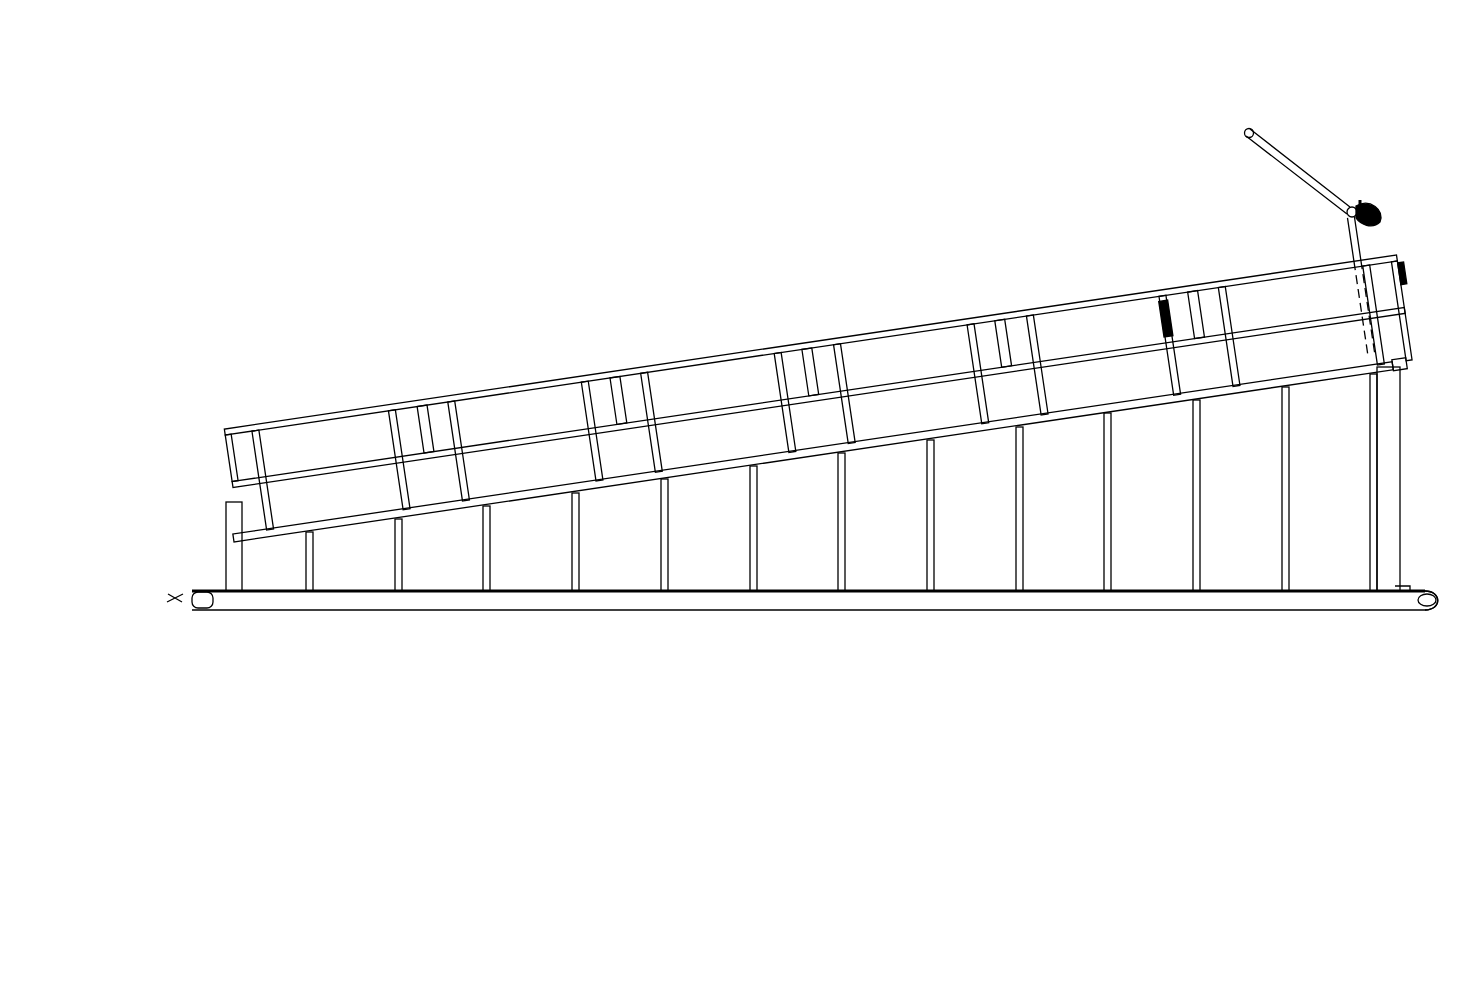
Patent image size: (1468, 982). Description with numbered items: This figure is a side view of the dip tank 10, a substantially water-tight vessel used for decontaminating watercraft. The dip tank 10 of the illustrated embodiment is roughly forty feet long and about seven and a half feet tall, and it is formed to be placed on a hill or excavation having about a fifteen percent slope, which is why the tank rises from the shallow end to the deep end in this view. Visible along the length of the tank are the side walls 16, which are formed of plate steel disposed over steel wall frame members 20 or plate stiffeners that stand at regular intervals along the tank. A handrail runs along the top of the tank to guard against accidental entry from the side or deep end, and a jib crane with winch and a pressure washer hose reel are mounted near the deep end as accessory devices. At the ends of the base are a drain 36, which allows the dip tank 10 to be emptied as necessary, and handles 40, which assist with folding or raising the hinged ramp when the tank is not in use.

The dip tank 10 is at (722, 143).
The side walls 16 is at (889, 526).
The wall frame members 20 is at (658, 579).
The drain 36 is at (1440, 604).
The handles 40 is at (183, 594).